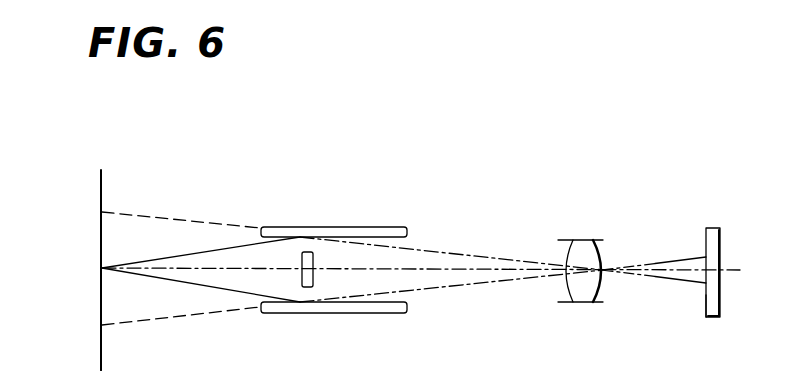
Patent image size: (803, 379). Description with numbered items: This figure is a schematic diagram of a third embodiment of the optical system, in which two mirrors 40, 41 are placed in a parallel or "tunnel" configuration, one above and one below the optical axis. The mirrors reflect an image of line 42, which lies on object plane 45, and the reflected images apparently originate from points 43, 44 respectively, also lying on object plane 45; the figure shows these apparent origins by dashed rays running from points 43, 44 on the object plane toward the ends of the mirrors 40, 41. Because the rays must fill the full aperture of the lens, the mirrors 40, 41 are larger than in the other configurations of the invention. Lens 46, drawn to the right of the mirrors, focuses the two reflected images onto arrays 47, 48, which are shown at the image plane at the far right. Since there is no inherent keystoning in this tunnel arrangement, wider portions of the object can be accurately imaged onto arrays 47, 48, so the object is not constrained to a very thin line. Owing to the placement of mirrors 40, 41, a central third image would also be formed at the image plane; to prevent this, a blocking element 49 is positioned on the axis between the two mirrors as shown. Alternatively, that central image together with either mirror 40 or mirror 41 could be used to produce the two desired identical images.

The mirror 40 is at (393, 227).
The mirror 41 is at (388, 313).
The line 42 is at (85, 270).
The point 43 is at (102, 212).
The point 44 is at (102, 325).
The object plane 45 is at (101, 338).
The lens 46 is at (601, 256).
The array 47 is at (706, 302).
The array 48 is at (706, 243).
The blocking element 49 is at (308, 252).